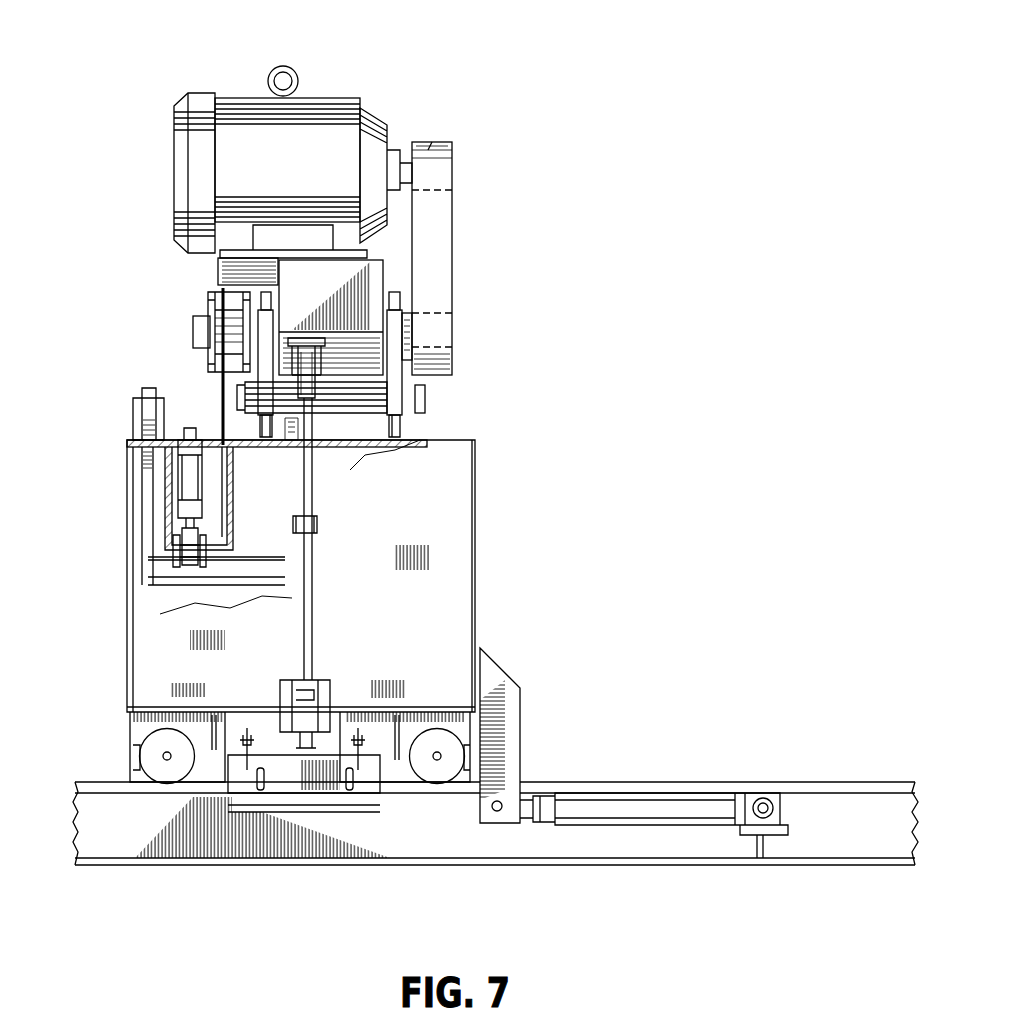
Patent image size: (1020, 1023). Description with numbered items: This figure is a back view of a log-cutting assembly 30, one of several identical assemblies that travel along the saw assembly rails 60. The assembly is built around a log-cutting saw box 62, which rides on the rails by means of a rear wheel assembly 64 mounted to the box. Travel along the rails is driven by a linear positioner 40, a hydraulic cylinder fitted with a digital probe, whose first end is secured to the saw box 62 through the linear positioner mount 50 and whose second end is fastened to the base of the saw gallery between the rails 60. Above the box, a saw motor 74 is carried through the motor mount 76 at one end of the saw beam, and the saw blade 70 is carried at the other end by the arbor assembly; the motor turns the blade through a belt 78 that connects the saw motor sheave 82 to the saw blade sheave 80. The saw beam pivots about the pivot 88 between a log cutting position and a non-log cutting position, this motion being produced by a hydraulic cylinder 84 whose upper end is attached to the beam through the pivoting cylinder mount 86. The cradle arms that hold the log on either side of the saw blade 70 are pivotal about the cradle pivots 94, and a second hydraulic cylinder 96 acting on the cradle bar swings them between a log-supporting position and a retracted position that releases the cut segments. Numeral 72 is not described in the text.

The log-cutting assembly 30 is at (573, 105).
The linear positioner 40 is at (648, 805).
The linear positioner mount 50 is at (497, 675).
The saw assembly rails 60 is at (105, 784).
The log-cutting saw box 62 is at (478, 495).
The wheel assembly 64 is at (121, 755).
The saw blade 70 is at (222, 320).
The pulley 72 is at (195, 332).
The saw motor 74 is at (340, 95).
The motor mount 76 is at (240, 270).
The belt 78 is at (445, 230).
The saw blade sheave 80 is at (440, 330).
The saw motor sheave 82 is at (440, 148).
The hydraulic cylinder 84 is at (313, 595).
The pivoting cylinder mount 86 is at (312, 363).
The pivot 88 is at (427, 395).
The cradle pivots 94 is at (133, 415).
The hydraulic cylinder 96 is at (180, 487).